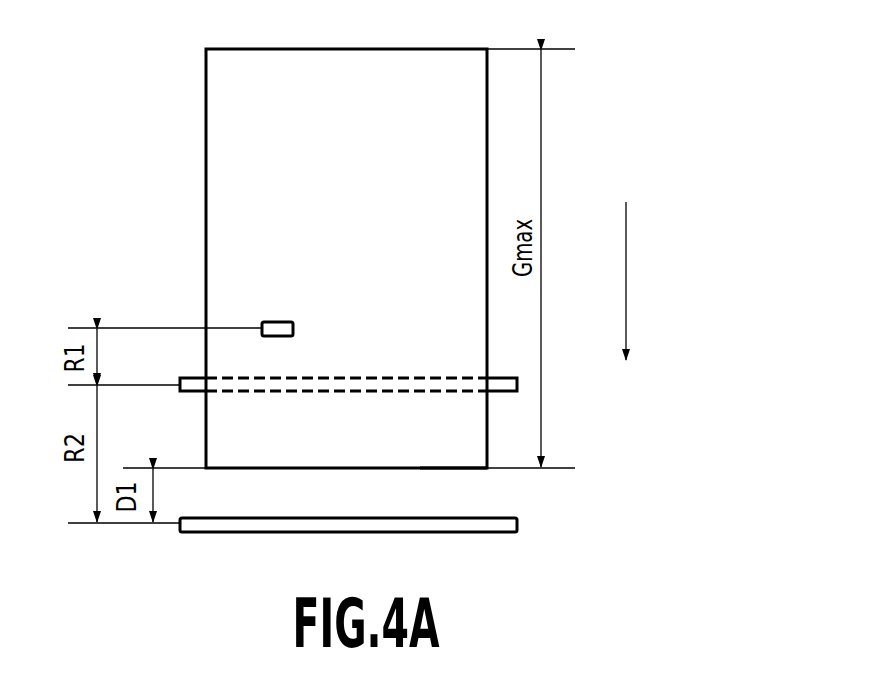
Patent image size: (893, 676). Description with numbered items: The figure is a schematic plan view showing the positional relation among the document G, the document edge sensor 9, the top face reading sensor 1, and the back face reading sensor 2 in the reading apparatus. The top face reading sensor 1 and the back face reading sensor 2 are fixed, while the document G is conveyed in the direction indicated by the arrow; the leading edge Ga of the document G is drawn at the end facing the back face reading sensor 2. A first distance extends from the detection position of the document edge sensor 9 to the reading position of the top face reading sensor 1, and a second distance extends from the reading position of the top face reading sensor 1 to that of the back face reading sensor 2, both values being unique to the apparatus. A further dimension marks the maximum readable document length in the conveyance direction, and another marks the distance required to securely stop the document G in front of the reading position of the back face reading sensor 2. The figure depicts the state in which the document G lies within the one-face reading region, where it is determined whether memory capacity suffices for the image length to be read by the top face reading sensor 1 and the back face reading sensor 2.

The document G is at (350, 58).
The bottom edge of glass sheet Ga is at (472, 469).
The top face reading sensor 1 is at (332, 378).
The document edge sensor 9 is at (279, 322).
The back face reading sensor 2 is at (337, 533).